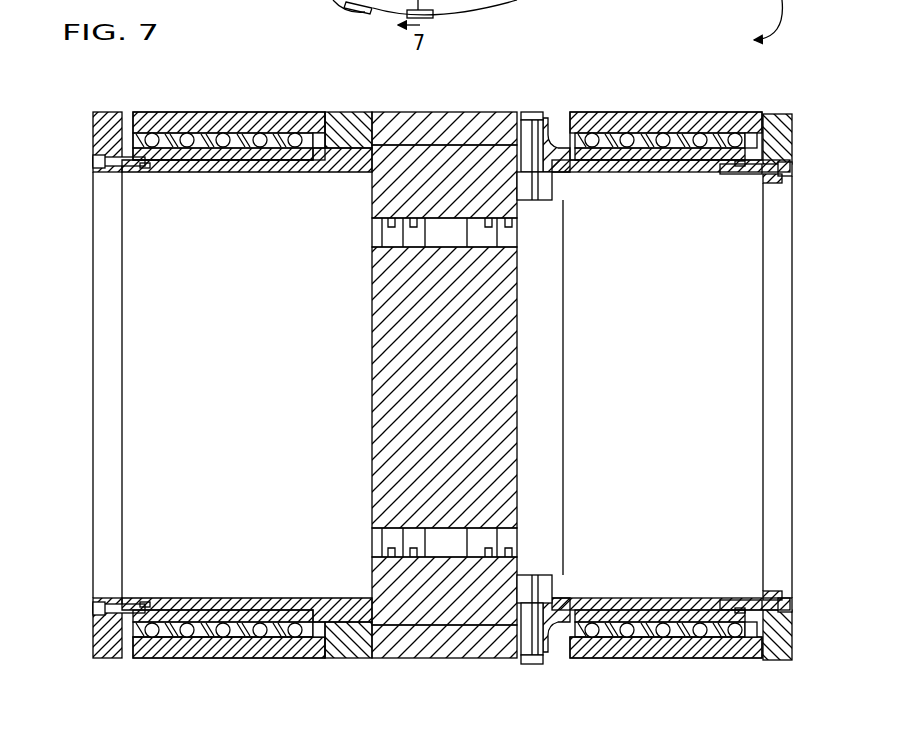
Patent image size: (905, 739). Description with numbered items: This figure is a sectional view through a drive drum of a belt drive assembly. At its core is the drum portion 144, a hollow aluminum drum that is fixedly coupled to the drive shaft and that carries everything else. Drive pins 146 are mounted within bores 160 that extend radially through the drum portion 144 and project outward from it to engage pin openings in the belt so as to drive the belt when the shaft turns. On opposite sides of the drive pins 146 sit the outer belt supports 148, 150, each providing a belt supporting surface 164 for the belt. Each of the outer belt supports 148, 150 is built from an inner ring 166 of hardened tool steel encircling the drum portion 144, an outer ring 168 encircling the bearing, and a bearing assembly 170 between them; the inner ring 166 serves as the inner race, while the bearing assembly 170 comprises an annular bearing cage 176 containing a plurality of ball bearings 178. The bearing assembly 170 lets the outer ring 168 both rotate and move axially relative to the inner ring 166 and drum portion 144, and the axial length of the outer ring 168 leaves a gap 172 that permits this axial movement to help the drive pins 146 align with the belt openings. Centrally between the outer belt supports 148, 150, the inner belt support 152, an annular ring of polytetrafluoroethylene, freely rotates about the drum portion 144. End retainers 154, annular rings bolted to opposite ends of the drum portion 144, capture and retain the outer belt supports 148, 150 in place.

The drum portion 144 is at (702, 173).
The drive pins 146 is at (334, 0).
The outer belt support 148 is at (641, 109).
The outer belt support 150 is at (176, 110).
The inner belt support 152 is at (422, 656).
The end retainers 154 is at (92, 638).
The bores 160 is at (563, 173).
The belt supporting surface 164 is at (188, 660).
The inner ring 166 is at (216, 152).
The outer ring 168 is at (277, 111).
The bearing assembly 170 is at (206, 127).
The gap 172 is at (127, 112).
The bearing cage 176 is at (712, 140).
The ball bearings 178 is at (669, 138).